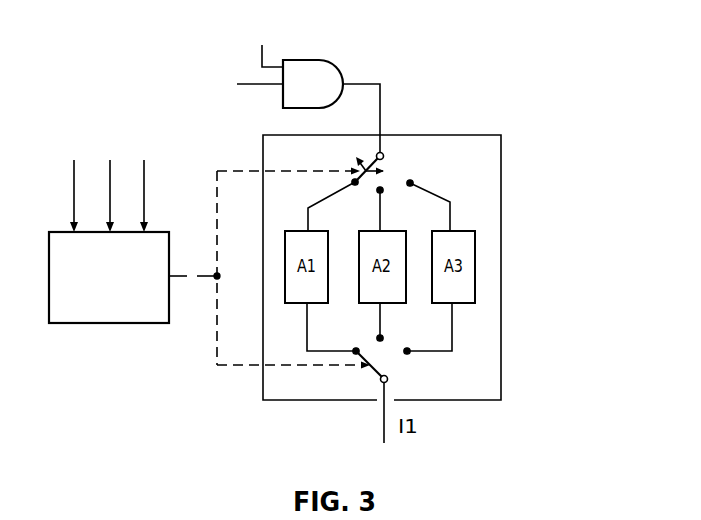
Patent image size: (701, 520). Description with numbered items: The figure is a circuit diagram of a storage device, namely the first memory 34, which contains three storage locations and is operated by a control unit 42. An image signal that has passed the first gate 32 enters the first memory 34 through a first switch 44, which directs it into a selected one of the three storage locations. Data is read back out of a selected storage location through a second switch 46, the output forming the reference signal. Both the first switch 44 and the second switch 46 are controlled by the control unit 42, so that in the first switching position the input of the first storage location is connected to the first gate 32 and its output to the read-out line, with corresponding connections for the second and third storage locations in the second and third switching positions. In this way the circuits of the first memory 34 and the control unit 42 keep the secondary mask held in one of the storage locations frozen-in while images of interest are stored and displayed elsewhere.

The first gate 32 is at (324, 66).
The first memory 34 is at (495, 200).
The control unit 42 is at (127, 313).
The first switch 44 is at (388, 171).
The second switch 46 is at (385, 358).